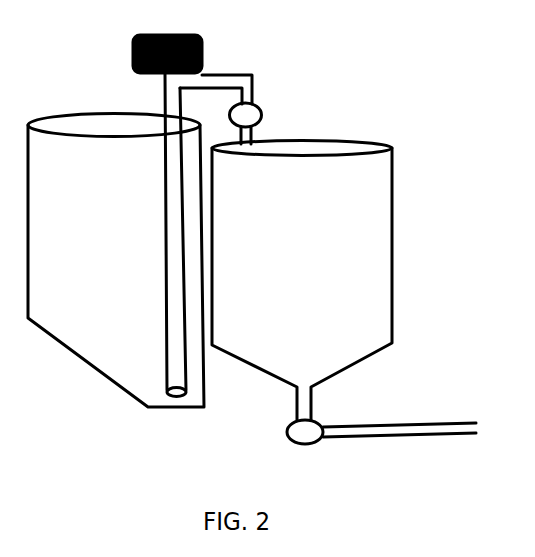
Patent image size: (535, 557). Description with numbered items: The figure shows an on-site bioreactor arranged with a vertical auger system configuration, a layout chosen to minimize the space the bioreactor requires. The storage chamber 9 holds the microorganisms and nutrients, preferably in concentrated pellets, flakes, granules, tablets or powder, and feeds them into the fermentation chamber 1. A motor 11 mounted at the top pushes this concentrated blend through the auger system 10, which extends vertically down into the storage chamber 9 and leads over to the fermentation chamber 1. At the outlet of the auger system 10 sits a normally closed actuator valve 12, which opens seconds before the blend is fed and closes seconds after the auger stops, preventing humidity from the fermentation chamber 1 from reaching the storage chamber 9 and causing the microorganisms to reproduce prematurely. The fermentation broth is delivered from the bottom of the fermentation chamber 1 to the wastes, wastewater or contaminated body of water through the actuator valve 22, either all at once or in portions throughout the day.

The fermentation chamber 1 is at (302, 281).
The storage chamber 9 is at (116, 261).
The auger system 10 is at (161, 235).
The motor 11 is at (167, 38).
The actuator valve 12 is at (234, 109).
The actuator valve 22 is at (381, 446).